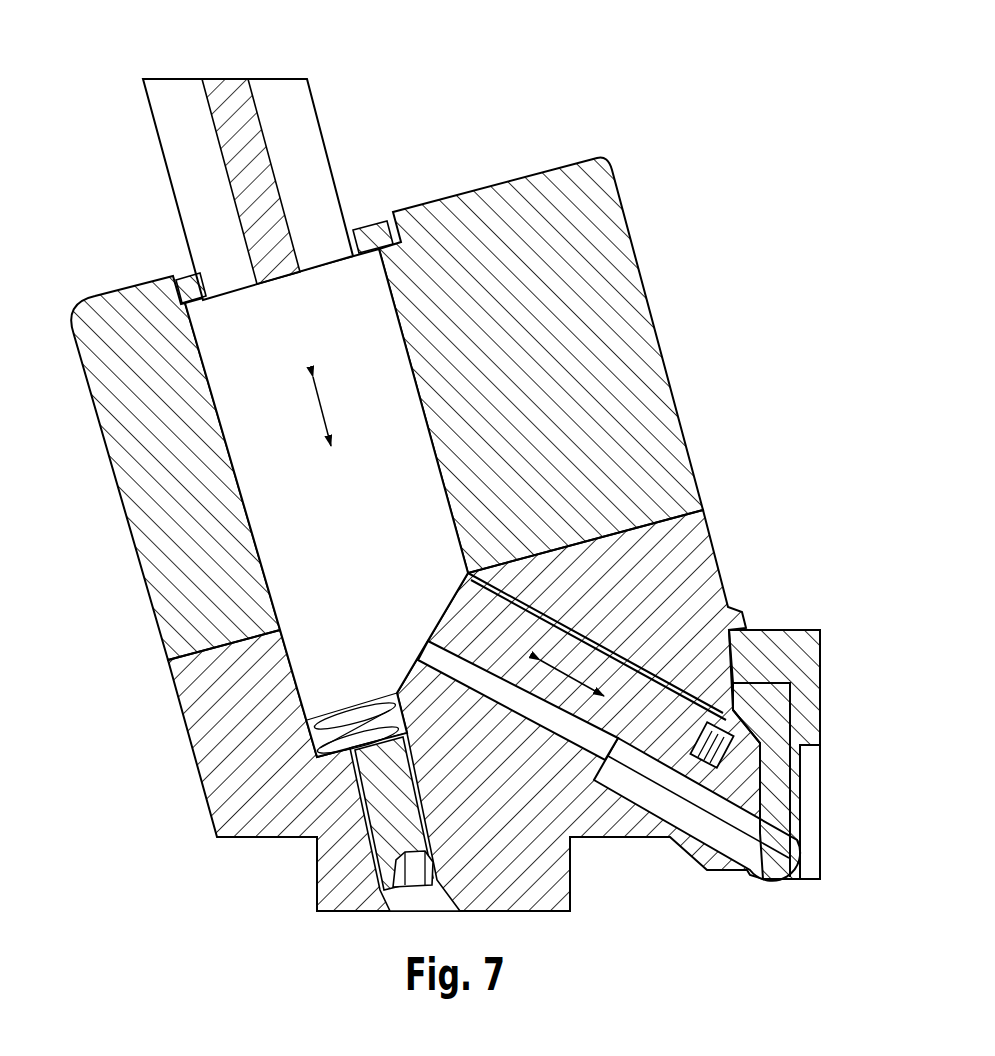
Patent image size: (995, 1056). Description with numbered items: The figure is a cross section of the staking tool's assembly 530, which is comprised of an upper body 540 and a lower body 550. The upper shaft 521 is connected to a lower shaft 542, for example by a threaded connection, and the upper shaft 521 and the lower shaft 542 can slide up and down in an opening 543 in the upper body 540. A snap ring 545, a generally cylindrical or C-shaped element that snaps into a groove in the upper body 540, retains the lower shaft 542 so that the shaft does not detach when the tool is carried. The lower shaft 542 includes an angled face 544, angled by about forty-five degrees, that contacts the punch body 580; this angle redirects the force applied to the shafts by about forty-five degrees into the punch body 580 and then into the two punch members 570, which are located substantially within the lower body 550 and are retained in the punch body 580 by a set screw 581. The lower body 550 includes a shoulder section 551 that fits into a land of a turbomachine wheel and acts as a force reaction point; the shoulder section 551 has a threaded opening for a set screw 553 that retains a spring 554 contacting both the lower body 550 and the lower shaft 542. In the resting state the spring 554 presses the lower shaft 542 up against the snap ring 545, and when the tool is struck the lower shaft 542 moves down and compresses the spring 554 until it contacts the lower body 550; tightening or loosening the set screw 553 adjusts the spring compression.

The upper shaft 521 is at (334, 128).
The assembly 530 is at (466, 558).
The upper body 540 is at (686, 381).
The lower shaft 542 is at (430, 408).
The opening 543 is at (181, 290).
The angled face 544 is at (440, 628).
The snap ring 545 is at (392, 228).
The lower body 550 is at (722, 515).
The shoulder section 551 is at (320, 906).
The set screw 553 is at (448, 863).
The spring 554 is at (317, 744).
The punch members 570 is at (778, 816).
The punch body 580 is at (770, 738).
The set screw 581 is at (737, 713).